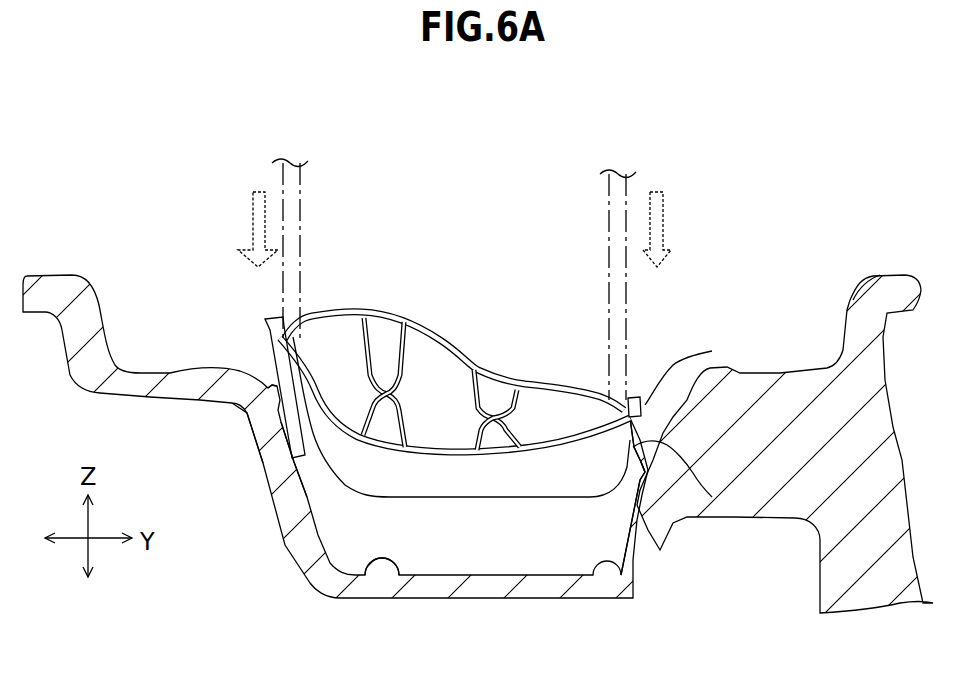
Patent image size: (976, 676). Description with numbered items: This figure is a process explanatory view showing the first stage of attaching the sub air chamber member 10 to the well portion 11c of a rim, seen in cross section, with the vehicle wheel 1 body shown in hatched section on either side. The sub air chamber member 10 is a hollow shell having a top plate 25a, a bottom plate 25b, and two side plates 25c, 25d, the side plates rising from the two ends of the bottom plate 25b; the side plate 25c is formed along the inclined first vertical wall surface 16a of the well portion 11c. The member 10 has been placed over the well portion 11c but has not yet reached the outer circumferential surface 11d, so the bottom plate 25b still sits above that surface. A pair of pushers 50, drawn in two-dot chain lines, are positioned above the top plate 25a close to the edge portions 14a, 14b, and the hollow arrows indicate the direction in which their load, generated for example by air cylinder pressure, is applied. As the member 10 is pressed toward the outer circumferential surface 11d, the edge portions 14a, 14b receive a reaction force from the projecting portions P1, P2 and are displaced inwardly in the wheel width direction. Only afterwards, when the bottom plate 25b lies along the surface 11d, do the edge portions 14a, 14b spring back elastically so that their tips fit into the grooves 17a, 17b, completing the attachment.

The vehicle body panel 1 is at (890, 370).
The sub air chamber member 10 is at (433, 406).
The well portion 11c is at (470, 549).
The outer circumferential surface 11d is at (373, 578).
The edge portion 14a is at (641, 400).
The edge portion 14b is at (267, 325).
The first vertical wall surface 16a is at (607, 598).
The groove 17a is at (677, 524).
The groove 17b is at (247, 422).
The top plate 25a is at (337, 312).
The bottom plate 25b is at (507, 499).
The side plate 25c is at (701, 369).
The side plate 25d is at (280, 463).
The pusher 50 is at (300, 178).
The projecting portion P1 is at (682, 455).
The projecting portion P2 is at (268, 378).